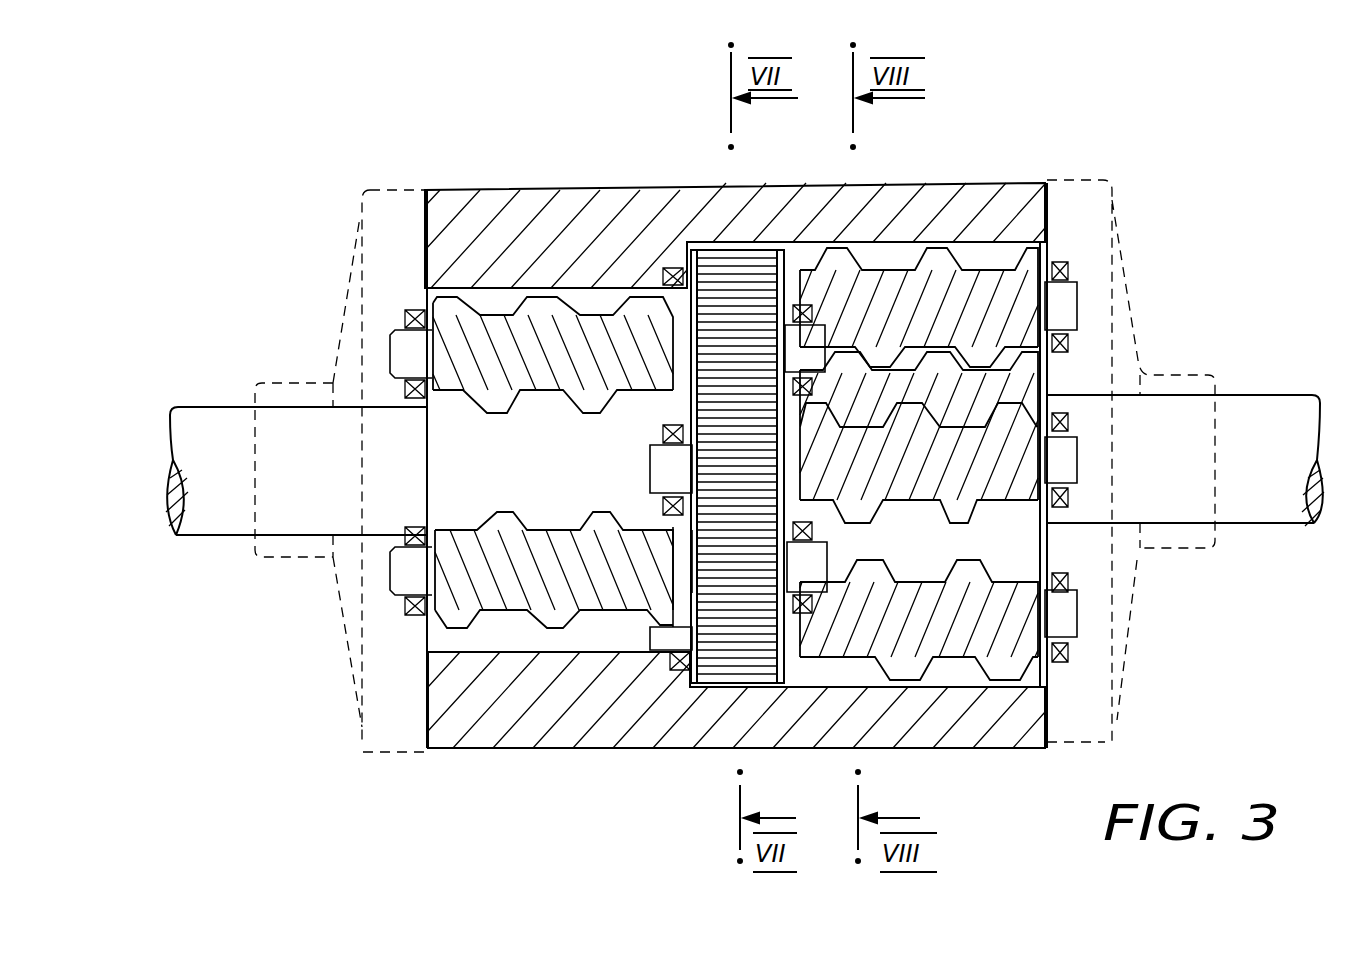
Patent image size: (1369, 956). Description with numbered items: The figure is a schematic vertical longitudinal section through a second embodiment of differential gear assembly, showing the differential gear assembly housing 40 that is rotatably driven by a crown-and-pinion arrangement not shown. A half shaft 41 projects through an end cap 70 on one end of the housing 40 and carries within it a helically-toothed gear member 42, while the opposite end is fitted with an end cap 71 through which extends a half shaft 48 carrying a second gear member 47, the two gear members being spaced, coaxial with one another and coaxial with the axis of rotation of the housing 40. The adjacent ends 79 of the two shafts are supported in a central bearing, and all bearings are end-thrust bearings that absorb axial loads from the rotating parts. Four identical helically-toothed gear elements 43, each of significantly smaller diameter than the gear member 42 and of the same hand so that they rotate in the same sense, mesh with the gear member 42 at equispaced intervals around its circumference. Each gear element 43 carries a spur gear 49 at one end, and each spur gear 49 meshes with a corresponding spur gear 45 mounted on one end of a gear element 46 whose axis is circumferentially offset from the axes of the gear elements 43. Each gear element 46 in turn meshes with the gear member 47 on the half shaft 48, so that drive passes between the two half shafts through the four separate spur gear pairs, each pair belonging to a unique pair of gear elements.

The differential gear assembly housing 40 is at (562, 198).
The half shaft 41 is at (197, 432).
The helically-toothed gear member 42 is at (483, 468).
The helically-toothed gear element 43 is at (508, 335).
The spur gear 45 is at (722, 267).
The gear element 46 is at (870, 273).
The second gear member 47 is at (968, 388).
The half shaft 48 is at (1257, 417).
The spur gear 49 is at (747, 333).
The end cap 70 is at (397, 235).
The end cap 71 is at (1105, 680).
The adjacent ends of the shafts 79 is at (507, 612).